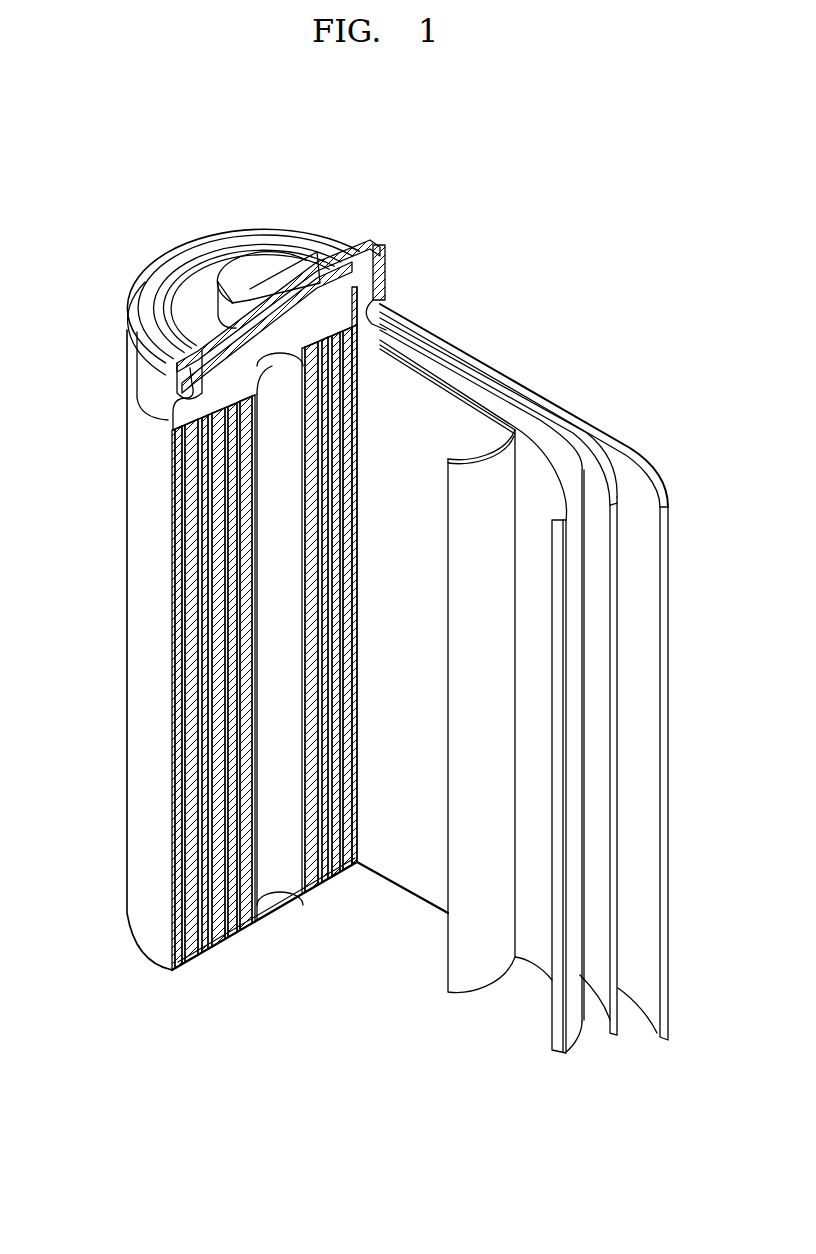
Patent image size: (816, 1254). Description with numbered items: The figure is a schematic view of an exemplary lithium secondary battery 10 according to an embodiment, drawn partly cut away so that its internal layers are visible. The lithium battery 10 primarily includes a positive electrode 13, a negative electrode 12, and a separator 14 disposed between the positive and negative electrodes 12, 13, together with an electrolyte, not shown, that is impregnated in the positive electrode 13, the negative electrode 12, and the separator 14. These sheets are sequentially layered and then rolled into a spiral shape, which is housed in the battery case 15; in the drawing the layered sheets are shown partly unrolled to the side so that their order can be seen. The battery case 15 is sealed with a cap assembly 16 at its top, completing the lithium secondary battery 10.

The lithium battery 10 is at (387, 165).
The negative electrode 12 is at (653, 483).
The positive electrode 13 is at (542, 438).
The separator 14 is at (478, 457).
The battery case 15 is at (143, 640).
The cap assembly 16 is at (251, 262).